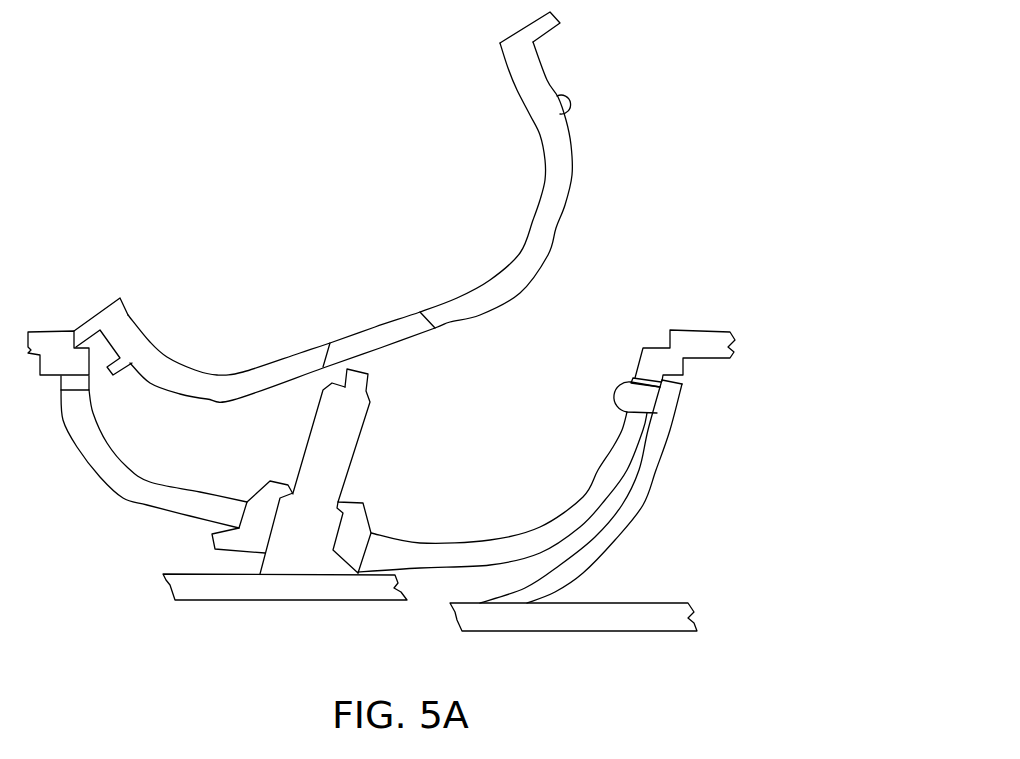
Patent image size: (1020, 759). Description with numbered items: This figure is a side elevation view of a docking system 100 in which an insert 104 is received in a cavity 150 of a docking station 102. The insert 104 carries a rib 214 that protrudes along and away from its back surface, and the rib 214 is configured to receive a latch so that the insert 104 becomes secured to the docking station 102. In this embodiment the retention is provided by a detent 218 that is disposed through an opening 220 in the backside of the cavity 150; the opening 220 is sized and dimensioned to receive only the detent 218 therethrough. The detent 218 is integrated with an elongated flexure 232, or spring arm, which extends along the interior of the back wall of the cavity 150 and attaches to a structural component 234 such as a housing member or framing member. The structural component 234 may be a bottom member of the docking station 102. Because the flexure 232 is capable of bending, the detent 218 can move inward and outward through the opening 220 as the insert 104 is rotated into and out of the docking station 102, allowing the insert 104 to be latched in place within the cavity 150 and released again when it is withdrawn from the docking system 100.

The docking system 100 is at (287, 133).
The docking station 102 is at (700, 330).
The insert 104 is at (104, 300).
The cavity 150 is at (480, 543).
The rib 214 is at (568, 102).
The detent 218 is at (617, 396).
The opening 220 is at (634, 378).
The elongated flexure 232 is at (650, 495).
The structural component 234 is at (625, 603).